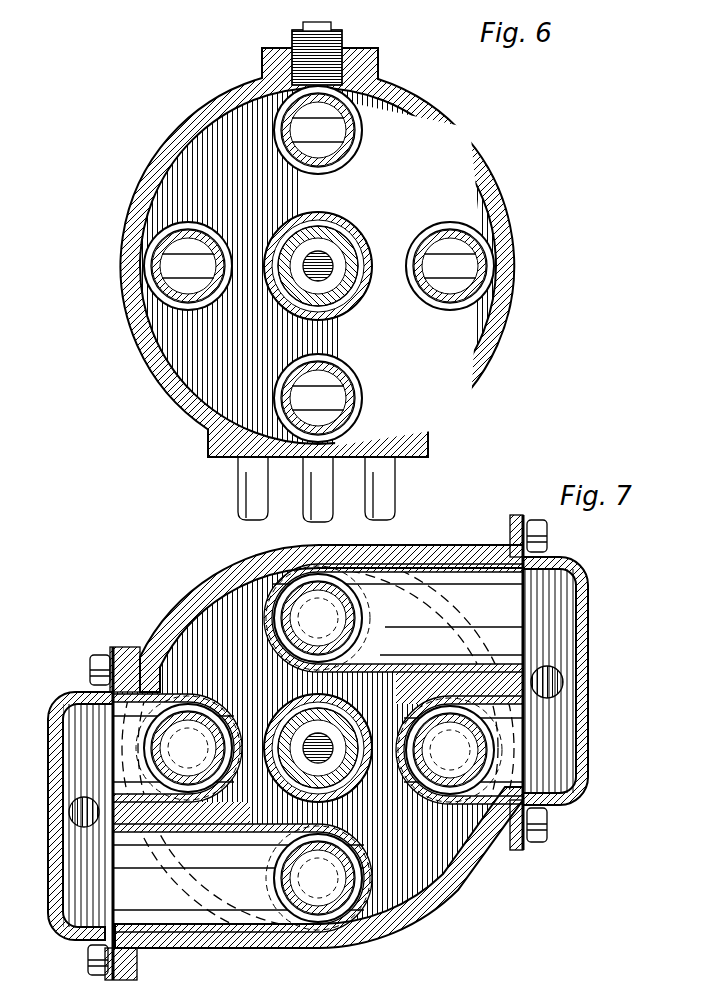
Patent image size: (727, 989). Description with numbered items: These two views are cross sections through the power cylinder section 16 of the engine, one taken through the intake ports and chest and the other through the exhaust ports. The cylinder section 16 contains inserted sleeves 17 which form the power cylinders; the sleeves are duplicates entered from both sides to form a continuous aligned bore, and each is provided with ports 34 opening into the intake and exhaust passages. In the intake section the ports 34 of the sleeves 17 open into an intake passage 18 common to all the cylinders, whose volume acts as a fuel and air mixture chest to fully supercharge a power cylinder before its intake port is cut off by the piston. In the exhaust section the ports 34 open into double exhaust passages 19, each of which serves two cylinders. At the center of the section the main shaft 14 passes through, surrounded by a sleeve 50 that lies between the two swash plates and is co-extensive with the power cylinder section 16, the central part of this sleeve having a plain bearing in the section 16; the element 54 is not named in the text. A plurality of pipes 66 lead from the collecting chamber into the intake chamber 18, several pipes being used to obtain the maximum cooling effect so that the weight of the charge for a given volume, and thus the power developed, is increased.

In FIG. 6, the main shaft 14 is at (374, 262).
In FIG. 6, the cylinder section 16 is at (120, 240).
In FIG. 7, the cylinder section 16 is at (443, 907).
In FIG. 6, the sleeves 17 is at (356, 127).
In FIG. 7, the sleeves 17 is at (352, 632).
In FIG. 6, the intake passage 18 is at (430, 157).
In FIG. 7, the double exhaust passages 19 is at (468, 598).
In FIG. 6, the ports 34 is at (345, 355).
In FIG. 7, the ports 34 is at (345, 650).
In FIG. 6, the sleeve 50 is at (345, 240).
In FIG. 7, the sleeve 50 is at (310, 718).
In FIG. 7, the bearing sleeve 54 is at (336, 766).
In FIG. 6, the pipes 66 is at (380, 500).